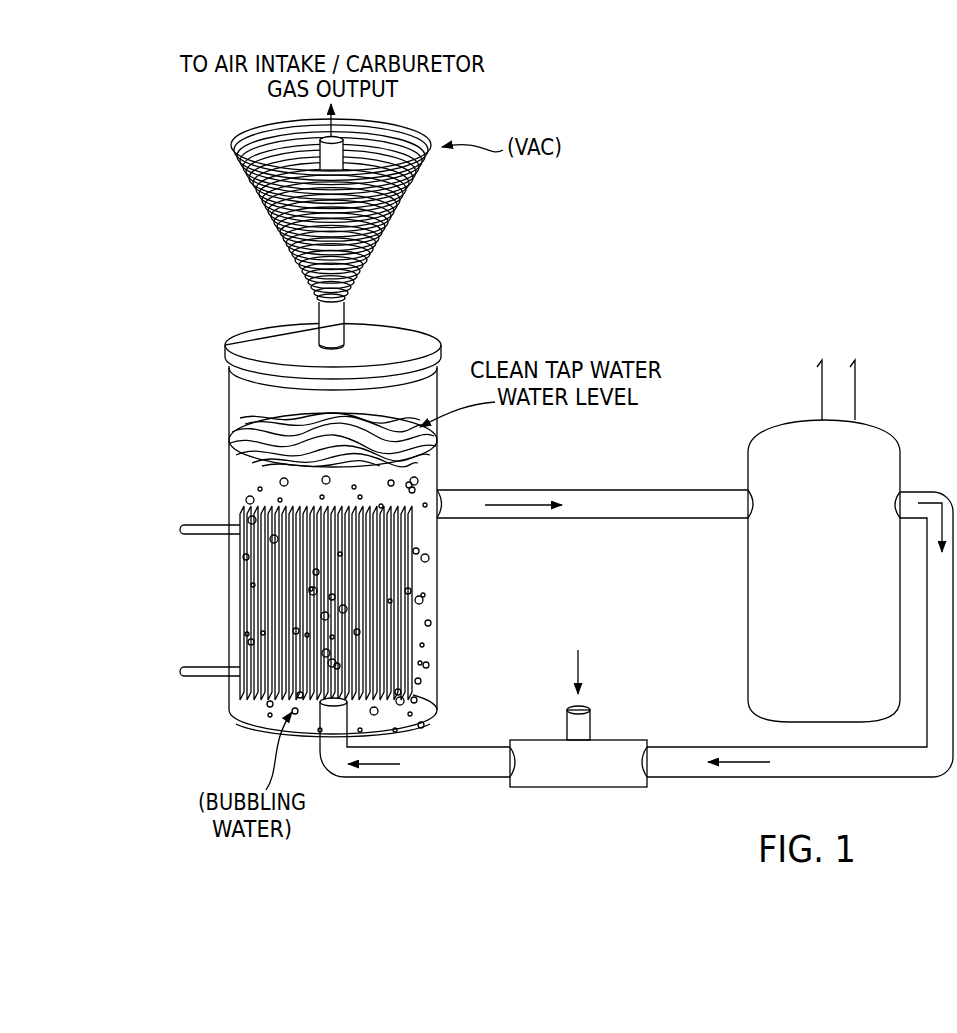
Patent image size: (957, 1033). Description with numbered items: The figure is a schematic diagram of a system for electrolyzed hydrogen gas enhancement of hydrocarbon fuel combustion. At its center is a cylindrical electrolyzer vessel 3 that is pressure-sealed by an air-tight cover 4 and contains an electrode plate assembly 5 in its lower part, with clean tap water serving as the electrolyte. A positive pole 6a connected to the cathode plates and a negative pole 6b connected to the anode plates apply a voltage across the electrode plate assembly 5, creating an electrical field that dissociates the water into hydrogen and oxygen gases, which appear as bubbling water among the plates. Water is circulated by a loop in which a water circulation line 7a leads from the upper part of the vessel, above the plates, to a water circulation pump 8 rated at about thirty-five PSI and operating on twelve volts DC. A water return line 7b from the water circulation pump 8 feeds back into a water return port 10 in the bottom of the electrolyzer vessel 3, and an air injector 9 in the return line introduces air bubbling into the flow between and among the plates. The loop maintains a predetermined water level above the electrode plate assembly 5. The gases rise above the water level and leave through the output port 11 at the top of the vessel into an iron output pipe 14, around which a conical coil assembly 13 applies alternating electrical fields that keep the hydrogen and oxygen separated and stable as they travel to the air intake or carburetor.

The conical coil assembly 13 is at (250, 191).
The iron output pipe 14 is at (311, 312).
The output port 11 is at (353, 332).
The cover 4 is at (240, 332).
The electrolyzer vessel 3 is at (228, 415).
The electrode plate assembly 5 is at (235, 613).
The positive pole 6a is at (200, 520).
The negative pole 6b is at (205, 679).
The water circulation line 7a is at (471, 489).
The water return line 7b is at (713, 744).
The water circulation pump 8 is at (745, 590).
The air injector 9 is at (547, 716).
The water return port 10 is at (345, 709).